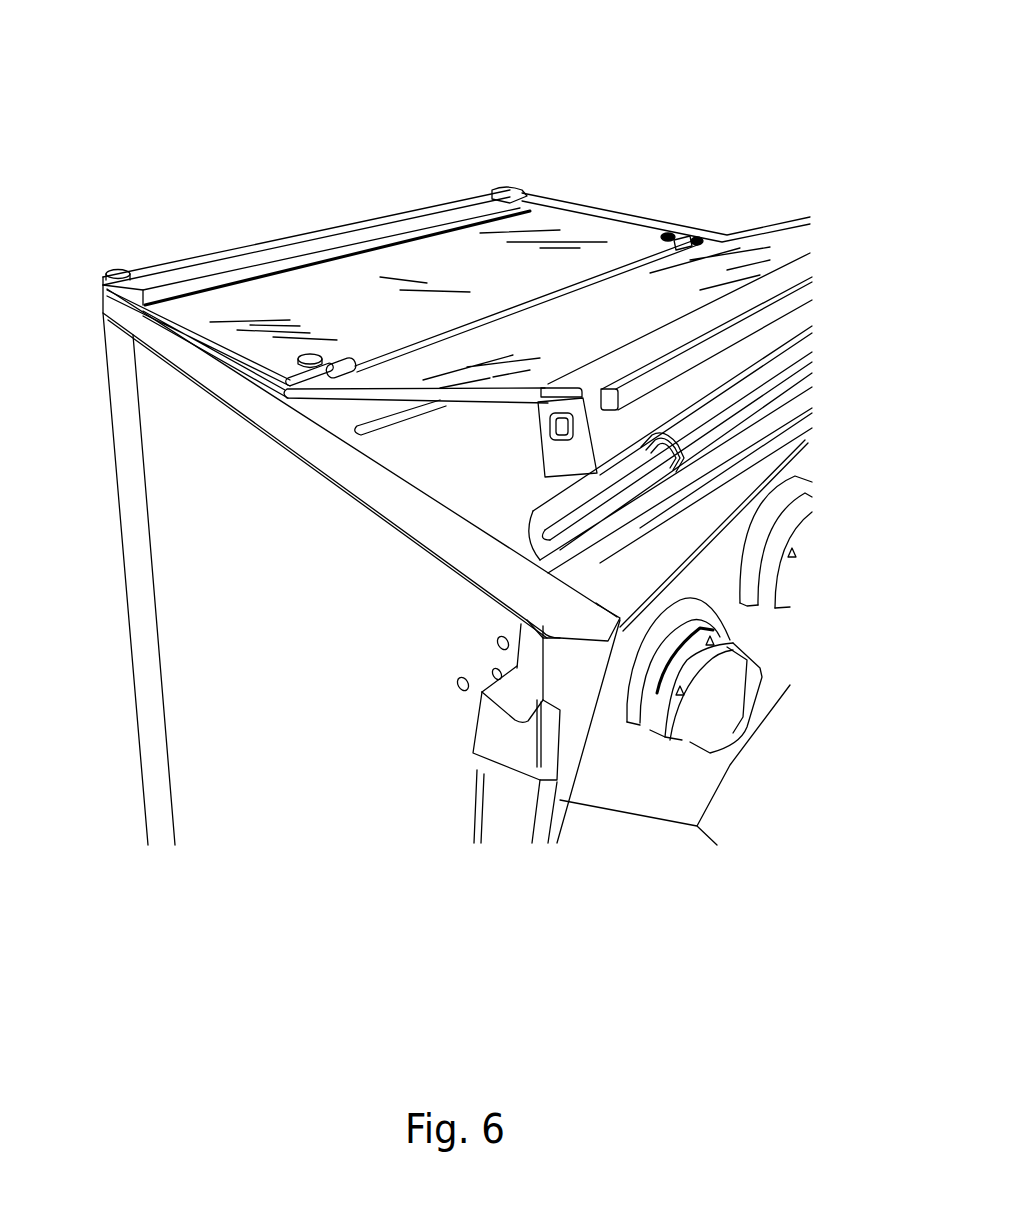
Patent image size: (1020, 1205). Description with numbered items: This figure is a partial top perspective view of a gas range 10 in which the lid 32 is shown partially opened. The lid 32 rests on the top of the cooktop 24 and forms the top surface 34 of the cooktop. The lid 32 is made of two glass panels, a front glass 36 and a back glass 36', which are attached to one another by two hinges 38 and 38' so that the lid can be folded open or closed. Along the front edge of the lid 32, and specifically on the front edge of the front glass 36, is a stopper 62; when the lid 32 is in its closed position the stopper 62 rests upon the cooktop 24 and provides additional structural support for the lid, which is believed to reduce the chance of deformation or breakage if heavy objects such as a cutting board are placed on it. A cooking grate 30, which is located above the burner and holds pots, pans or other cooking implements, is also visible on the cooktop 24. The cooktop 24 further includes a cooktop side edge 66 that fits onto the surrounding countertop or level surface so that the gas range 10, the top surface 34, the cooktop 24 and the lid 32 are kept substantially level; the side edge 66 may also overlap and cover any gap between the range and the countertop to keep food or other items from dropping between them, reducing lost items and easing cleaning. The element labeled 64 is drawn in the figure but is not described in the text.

The gas range 10 is at (233, 738).
The cooktop 24 is at (480, 480).
The cooking grate 30 is at (377, 430).
The lid 32 is at (247, 310).
The top surface 34 is at (620, 112).
The front glass 36 is at (582, 239).
The back glass 36' is at (376, 258).
The hinge 38 is at (316, 256).
The hinge 38' is at (705, 150).
The stopper 62 is at (760, 392).
The latch 64 is at (565, 415).
The cooktop side edge 66 is at (293, 460).